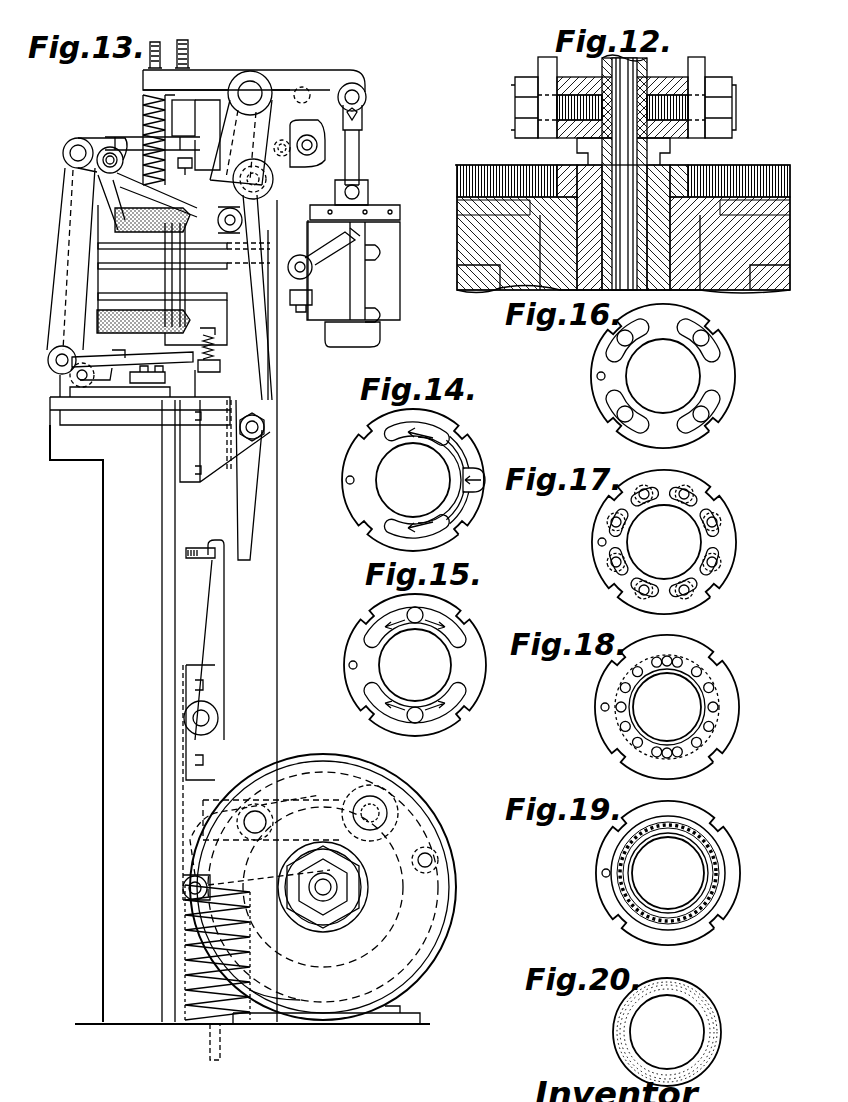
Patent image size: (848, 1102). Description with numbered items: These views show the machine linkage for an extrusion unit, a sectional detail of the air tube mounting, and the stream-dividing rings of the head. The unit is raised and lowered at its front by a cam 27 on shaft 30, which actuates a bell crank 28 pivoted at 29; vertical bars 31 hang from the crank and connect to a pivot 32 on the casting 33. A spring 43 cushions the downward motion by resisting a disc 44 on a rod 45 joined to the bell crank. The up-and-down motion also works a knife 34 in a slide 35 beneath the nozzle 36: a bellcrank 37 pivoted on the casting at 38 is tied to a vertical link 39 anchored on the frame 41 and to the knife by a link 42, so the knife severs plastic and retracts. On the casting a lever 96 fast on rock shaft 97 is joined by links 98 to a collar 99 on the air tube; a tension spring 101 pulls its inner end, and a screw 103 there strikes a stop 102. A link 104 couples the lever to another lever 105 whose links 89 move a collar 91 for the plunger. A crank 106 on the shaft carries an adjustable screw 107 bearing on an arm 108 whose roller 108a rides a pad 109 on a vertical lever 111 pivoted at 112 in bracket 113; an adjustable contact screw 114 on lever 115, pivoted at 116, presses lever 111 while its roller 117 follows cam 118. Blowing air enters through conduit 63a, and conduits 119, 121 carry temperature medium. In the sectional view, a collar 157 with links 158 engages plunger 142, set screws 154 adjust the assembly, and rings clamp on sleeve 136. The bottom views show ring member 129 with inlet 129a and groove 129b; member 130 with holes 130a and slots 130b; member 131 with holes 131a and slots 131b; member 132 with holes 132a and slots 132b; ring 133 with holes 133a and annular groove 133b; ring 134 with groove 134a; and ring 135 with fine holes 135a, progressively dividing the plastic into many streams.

In FIG. 13, the cam 27 is at (432, 850).
In FIG. 13, the bell crank 28 is at (318, 800).
In FIG. 13, the pivot 29 is at (380, 805).
In FIG. 13, the shaft 30 is at (335, 905).
In FIG. 13, the vertical bar 31 is at (268, 585).
In FIG. 13, the pivot 32 is at (392, 203).
In FIG. 13, the casting 33 is at (192, 140).
In FIG. 13, the knife 34 is at (185, 375).
In FIG. 13, the slide 35 is at (150, 410).
In FIG. 13, the nozzle 36 is at (382, 335).
In FIG. 13, the bellcrank 37 is at (92, 175).
In FIG. 13, the pivot 38 is at (108, 150).
In FIG. 13, the vertical link 39 is at (67, 190).
In FIG. 13, the frame 41 is at (112, 488).
In FIG. 13, the link 42 is at (150, 356).
In FIG. 13, the spring 43 is at (185, 937).
In FIG. 13, the disc 44 is at (330, 810).
In FIG. 13, the rod 45 is at (200, 832).
In FIG. 13, the conduit 63a is at (272, 175).
In FIG. 13, the link 89 is at (360, 168).
In FIG. 13, the collar 91 is at (370, 192).
In FIG. 13, the lever 96 is at (285, 118).
In FIG. 13, the rock shaft 97 is at (250, 81).
In FIG. 13, the link 98 is at (362, 105).
In FIG. 13, the collar 99 is at (364, 118).
In FIG. 13, the tension spring 101 is at (150, 80).
In FIG. 13, the stop 102 is at (150, 110).
In FIG. 13, the screw 103 is at (183, 40).
In FIG. 13, the link 104 is at (302, 87).
In FIG. 13, the lever 105 is at (318, 135).
In FIG. 13, the crank 106 is at (183, 110).
In FIG. 13, the adjustable screw 107 is at (187, 175).
In FIG. 13, the arm 108 is at (190, 208).
In FIG. 13, the roller 108a is at (220, 226).
In FIG. 13, the pad 109 is at (312, 278).
In FIG. 13, the vertical lever 111 is at (262, 380).
In FIG. 13, the pivot 112 is at (268, 425).
In FIG. 13, the bracket 113 is at (205, 450).
In FIG. 13, the adjustable contact screw 114 is at (193, 545).
In FIG. 13, the vertical lever 115 is at (205, 612).
In FIG. 13, the pivot 116 is at (197, 718).
In FIG. 13, the roller 117 is at (185, 892).
In FIG. 13, the cam 118 is at (290, 1005).
In FIG. 13, the conduit 119 is at (146, 268).
In FIG. 13, the conduit 121 is at (226, 290).
In FIG. 14, the ring member 129 is at (392, 480).
In FIG. 14, the inlet 129a is at (500, 460).
In FIG. 14, the semi-annular groove 129b is at (448, 471).
In FIG. 15, the ring member 130 is at (393, 665).
In FIG. 15, the hole 130a is at (454, 662).
In FIG. 15, the slot 130b is at (448, 665).
In FIG. 16, the ring member 131 is at (692, 376).
In FIG. 16, the hole 131a is at (666, 374).
In FIG. 16, the slot 131b is at (697, 376).
In FIG. 17, the ring member 132 is at (691, 542).
In FIG. 17, the hole 132a is at (695, 532).
In FIG. 17, the slot 132b is at (701, 542).
In FIG. 18, the ring 133 is at (692, 707).
In FIG. 18, the hole 133a is at (698, 702).
In FIG. 18, the annular groove 133b is at (703, 707).
In FIG. 19, the ring 134 is at (696, 873).
In FIG. 19, the groove 134a is at (706, 873).
In FIG. 20, the ring 135 is at (696, 1032).
In FIG. 20, the fine hole 135a is at (702, 1032).
In FIG. 12, the sleeve 136 is at (585, 160).
In FIG. 12, the plunger 142 is at (698, 172).
In FIG. 12, the set screw 154 is at (480, 178).
In FIG. 12, the collar 157 is at (690, 158).
In FIG. 12, the link 158 is at (700, 70).